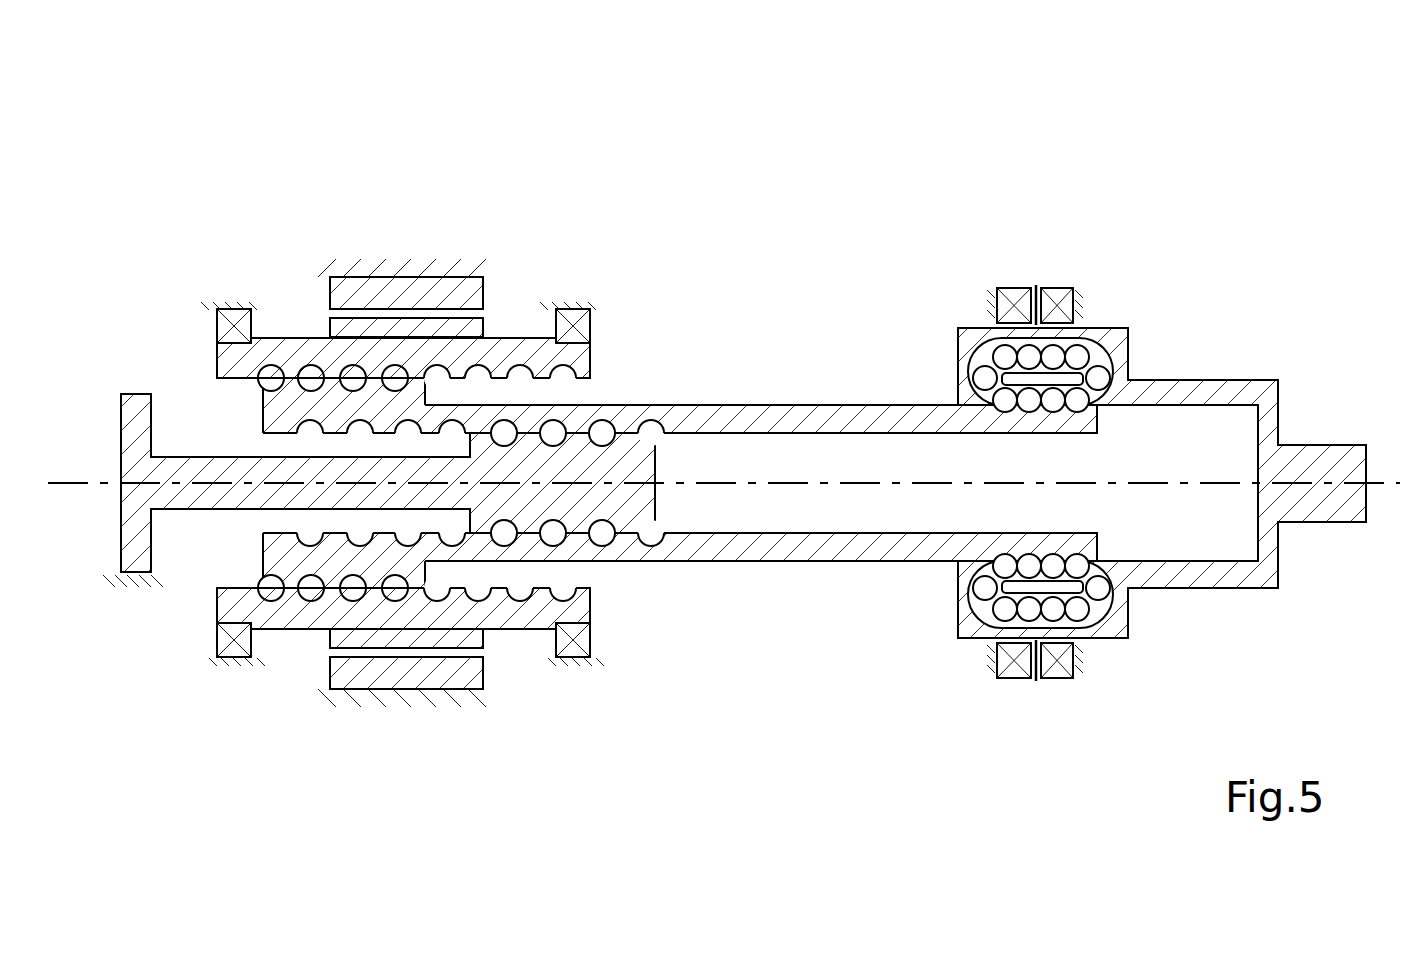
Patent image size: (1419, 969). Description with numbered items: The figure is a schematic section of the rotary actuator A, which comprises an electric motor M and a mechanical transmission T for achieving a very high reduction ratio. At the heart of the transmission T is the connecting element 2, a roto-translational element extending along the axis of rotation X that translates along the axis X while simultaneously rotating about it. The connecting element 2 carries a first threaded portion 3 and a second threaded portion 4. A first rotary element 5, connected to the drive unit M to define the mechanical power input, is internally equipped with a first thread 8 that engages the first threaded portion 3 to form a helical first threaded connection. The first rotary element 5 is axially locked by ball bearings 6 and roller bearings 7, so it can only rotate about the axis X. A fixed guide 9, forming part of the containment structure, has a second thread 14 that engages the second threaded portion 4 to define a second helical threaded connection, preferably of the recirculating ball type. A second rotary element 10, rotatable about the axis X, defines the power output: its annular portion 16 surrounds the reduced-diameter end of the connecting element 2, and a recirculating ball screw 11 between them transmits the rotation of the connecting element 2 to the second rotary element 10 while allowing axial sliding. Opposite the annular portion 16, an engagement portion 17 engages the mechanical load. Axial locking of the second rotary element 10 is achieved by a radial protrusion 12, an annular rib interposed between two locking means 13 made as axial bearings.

The connecting element 2 is at (667, 562).
The first threaded portion 3 is at (313, 381).
The second threaded portion 4 is at (308, 433).
The first rotary element 5 is at (517, 338).
The ball bearings 6 is at (237, 325).
The roller bearings 7 is at (578, 305).
The first thread 8 is at (585, 381).
The fixed guide 9 is at (200, 520).
The second rotary element 10 is at (1262, 372).
The recirculating ball screw 11 is at (1098, 378).
The radial protrusion 12 is at (1037, 285).
The locking means 13 is at (1012, 302).
The second thread 14 is at (605, 525).
The annular portion 16 is at (966, 640).
The engagement portion 17 is at (1278, 445).
The rotary actuator A is at (237, 193).
The electric motor M is at (401, 240).
The mechanical transmission T is at (710, 366).
The axis of rotation X is at (72, 484).